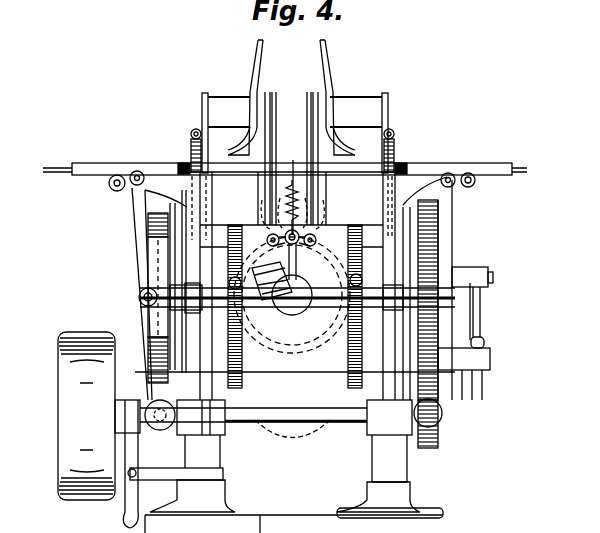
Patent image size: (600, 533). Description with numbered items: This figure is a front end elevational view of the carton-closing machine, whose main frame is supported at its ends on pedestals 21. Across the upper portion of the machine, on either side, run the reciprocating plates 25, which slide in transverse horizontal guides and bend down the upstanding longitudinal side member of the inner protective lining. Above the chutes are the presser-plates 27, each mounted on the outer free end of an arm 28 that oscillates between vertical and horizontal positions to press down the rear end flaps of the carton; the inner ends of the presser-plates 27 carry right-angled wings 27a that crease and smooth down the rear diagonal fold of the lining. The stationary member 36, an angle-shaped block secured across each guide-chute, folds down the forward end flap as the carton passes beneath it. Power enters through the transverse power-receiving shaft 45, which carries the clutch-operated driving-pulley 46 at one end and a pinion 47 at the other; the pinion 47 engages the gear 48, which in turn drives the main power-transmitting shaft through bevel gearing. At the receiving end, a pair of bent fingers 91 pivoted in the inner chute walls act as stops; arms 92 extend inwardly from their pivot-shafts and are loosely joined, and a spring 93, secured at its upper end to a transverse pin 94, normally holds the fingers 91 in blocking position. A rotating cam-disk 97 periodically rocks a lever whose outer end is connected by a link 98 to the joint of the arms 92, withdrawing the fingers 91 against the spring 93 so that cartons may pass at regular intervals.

The pedestals 21 is at (213, 460).
The plates 25 is at (60, 173).
The presser-plates 27 is at (295, 112).
The wings 27a is at (320, 65).
The arm 28 is at (202, 107).
The stationary member 36 is at (193, 145).
The power-receiving shaft 45 is at (297, 423).
The driving-pulley 46 is at (86, 416).
The pinion 47 is at (438, 446).
The gear 48 is at (436, 243).
The bent fingers 91 is at (262, 198).
The arms 92 is at (277, 228).
The spring 93 is at (288, 188).
The transverse pin 94 is at (295, 170).
The cam-disk 97 is at (360, 286).
The link 98 is at (229, 280).